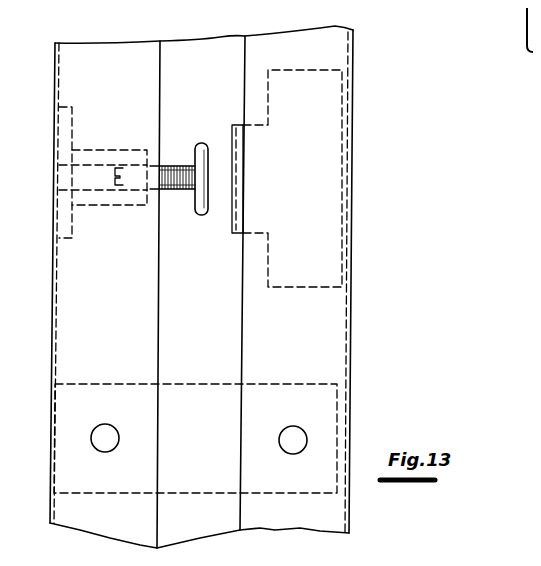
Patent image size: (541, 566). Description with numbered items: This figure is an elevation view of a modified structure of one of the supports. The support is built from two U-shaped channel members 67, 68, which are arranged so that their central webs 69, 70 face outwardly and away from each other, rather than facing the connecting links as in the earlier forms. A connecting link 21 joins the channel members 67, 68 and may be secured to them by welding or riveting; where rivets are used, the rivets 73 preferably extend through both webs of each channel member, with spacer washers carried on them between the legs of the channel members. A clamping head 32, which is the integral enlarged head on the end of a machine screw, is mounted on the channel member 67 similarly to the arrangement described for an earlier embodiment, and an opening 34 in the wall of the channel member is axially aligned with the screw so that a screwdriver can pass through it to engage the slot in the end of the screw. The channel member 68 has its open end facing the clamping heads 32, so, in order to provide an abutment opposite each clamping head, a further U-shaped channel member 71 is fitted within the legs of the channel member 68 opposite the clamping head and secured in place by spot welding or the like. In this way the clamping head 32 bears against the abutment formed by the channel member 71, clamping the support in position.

The connecting link 21 is at (208, 383).
The clamping head 32 is at (200, 215).
The opening 34 is at (58, 176).
The U-shaped channel member 67 is at (150, 314).
The U-shaped channel member 68 is at (243, 318).
The central web 69 is at (52, 303).
The central web 70 is at (352, 272).
The U-shaped channel member 71 is at (232, 235).
The rivet 73 is at (118, 419).